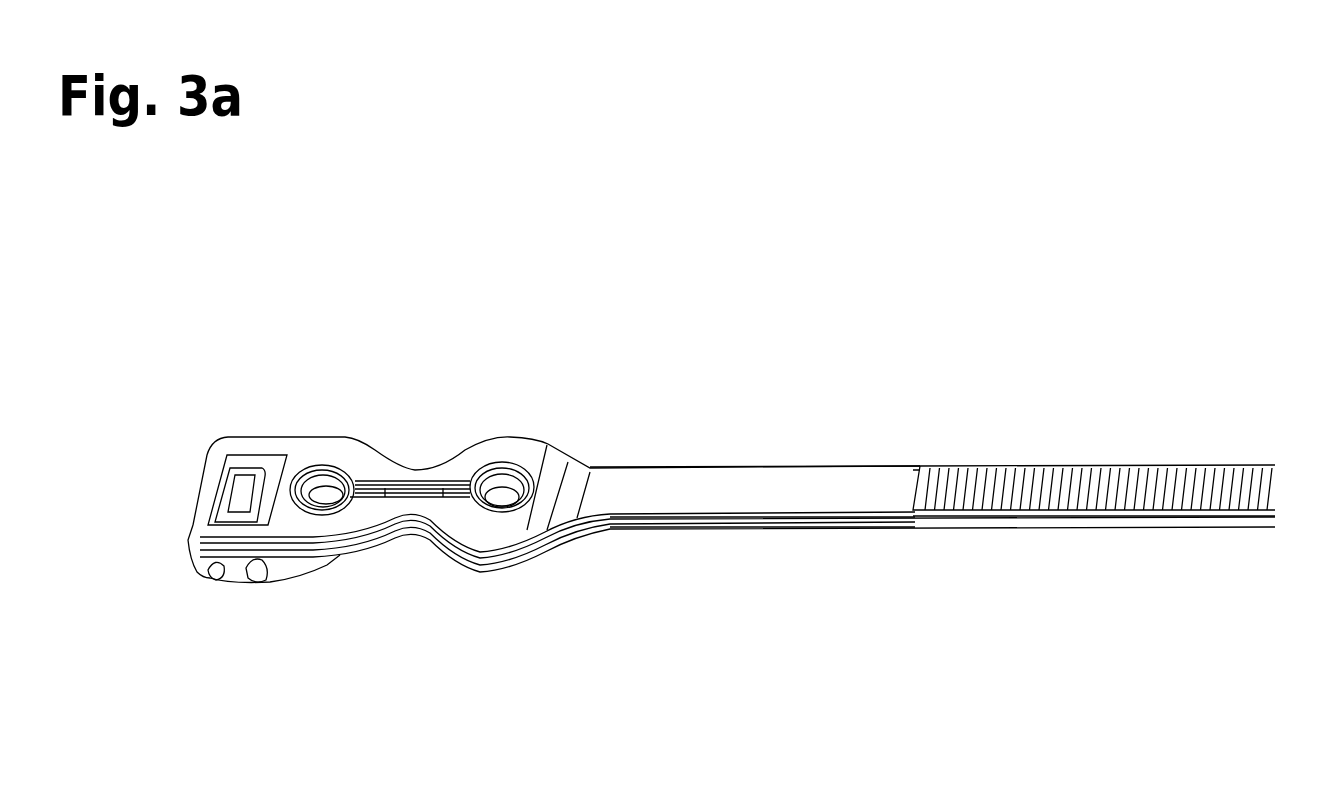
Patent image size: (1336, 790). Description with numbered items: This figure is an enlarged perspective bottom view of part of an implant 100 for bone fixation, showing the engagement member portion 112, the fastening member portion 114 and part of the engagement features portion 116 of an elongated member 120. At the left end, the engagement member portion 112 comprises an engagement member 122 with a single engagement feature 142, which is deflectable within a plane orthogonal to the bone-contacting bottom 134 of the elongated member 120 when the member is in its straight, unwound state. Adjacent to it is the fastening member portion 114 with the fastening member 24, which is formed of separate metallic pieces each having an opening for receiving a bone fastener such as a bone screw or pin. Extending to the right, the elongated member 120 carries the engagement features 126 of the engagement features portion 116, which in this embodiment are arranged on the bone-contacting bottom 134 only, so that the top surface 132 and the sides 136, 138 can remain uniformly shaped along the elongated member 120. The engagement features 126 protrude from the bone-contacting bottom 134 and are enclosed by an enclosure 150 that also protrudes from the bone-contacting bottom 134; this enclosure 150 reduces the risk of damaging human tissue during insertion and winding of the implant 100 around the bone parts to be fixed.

The implant 100 is at (823, 315).
The engagement member portion 112 is at (280, 428).
The fastening member portion 114 is at (457, 428).
The elongated member 120 is at (1260, 262).
The engagement features portion 116 is at (1068, 425).
The engagement member 122 is at (223, 548).
The engagement feature 142 is at (237, 497).
The fastening member 24 is at (472, 500).
The top surface 132 is at (618, 525).
The bone-contacting bottom 134 is at (677, 490).
The side 136 is at (760, 518).
The side 138 is at (815, 468).
The enclosure 150 is at (1050, 513).
The engagement features 126 is at (1153, 473).